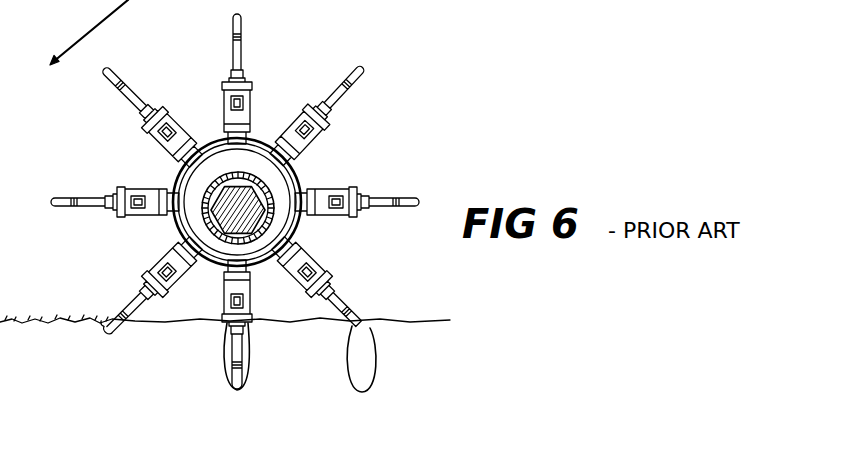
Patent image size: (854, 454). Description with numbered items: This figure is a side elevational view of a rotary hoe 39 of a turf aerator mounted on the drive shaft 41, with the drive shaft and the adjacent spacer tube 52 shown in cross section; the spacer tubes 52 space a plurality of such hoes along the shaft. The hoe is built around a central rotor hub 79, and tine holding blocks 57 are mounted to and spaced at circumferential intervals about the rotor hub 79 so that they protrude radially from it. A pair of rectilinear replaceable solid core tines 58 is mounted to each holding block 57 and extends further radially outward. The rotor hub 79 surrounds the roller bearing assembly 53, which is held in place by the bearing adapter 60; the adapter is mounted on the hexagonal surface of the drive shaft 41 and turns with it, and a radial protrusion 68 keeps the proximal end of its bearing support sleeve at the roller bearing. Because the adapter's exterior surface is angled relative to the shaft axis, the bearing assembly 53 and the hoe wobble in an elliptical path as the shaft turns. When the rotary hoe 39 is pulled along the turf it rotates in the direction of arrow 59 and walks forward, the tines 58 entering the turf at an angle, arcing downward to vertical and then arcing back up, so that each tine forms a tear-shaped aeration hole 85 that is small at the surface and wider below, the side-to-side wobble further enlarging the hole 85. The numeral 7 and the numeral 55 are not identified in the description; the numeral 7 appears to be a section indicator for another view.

The arrow 59 is at (86, 23).
The rotary hoe 39 is at (206, 58).
The section view line of FIG. 7 is at (278, 88).
The tines 58 is at (238, 22).
The roller bearing assembly 53 is at (274, 140).
The tine holding block 57 is at (318, 182).
The radial protrusion 68 is at (217, 164).
The drive shaft 41 is at (207, 190).
The bearing adapter 60 is at (281, 217).
The hub flange 55 is at (182, 227).
The spacer tube 52 is at (258, 251).
The rotor hub 79 is at (209, 258).
The aeration hole 85 is at (227, 355).